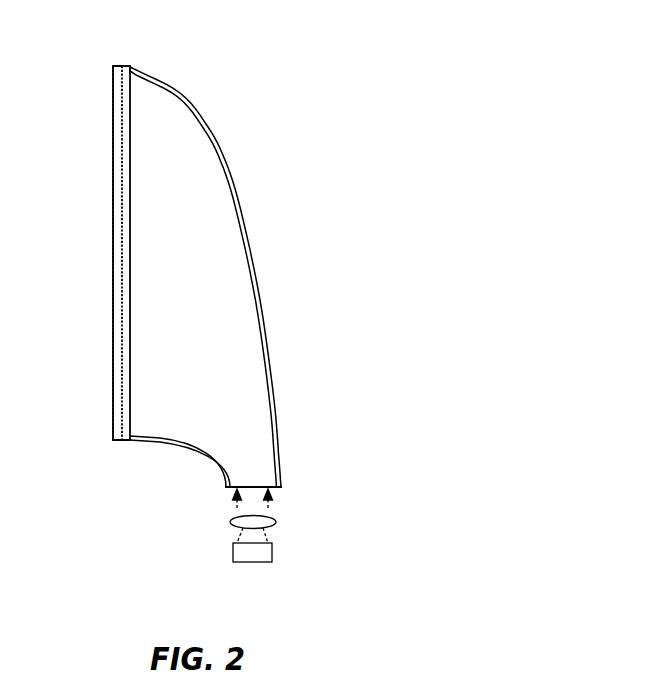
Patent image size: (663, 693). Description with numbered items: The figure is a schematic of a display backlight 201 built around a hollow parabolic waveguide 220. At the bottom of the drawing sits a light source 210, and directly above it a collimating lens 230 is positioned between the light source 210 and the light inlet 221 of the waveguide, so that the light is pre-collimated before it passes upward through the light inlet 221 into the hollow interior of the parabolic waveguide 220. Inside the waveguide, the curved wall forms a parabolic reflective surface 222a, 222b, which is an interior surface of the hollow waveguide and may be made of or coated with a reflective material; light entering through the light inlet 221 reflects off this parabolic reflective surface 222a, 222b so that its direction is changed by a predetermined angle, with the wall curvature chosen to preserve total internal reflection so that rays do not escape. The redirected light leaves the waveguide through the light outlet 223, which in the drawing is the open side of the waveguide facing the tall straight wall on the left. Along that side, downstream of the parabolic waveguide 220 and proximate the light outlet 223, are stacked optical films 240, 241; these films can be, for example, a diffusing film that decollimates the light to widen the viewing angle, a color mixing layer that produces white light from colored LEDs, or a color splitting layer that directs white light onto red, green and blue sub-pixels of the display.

The display backlight 201 is at (255, 68).
The parabolic waveguide 220 is at (244, 158).
The parabolic reflective surface 222a is at (231, 200).
The parabolic reflective surface 222b is at (170, 437).
The light inlet 221 is at (290, 496).
The light outlet 223 is at (150, 262).
The optical film 240 is at (128, 444).
The optical film 241 is at (115, 443).
The collimating lens 230 is at (276, 520).
The light source 210 is at (272, 553).